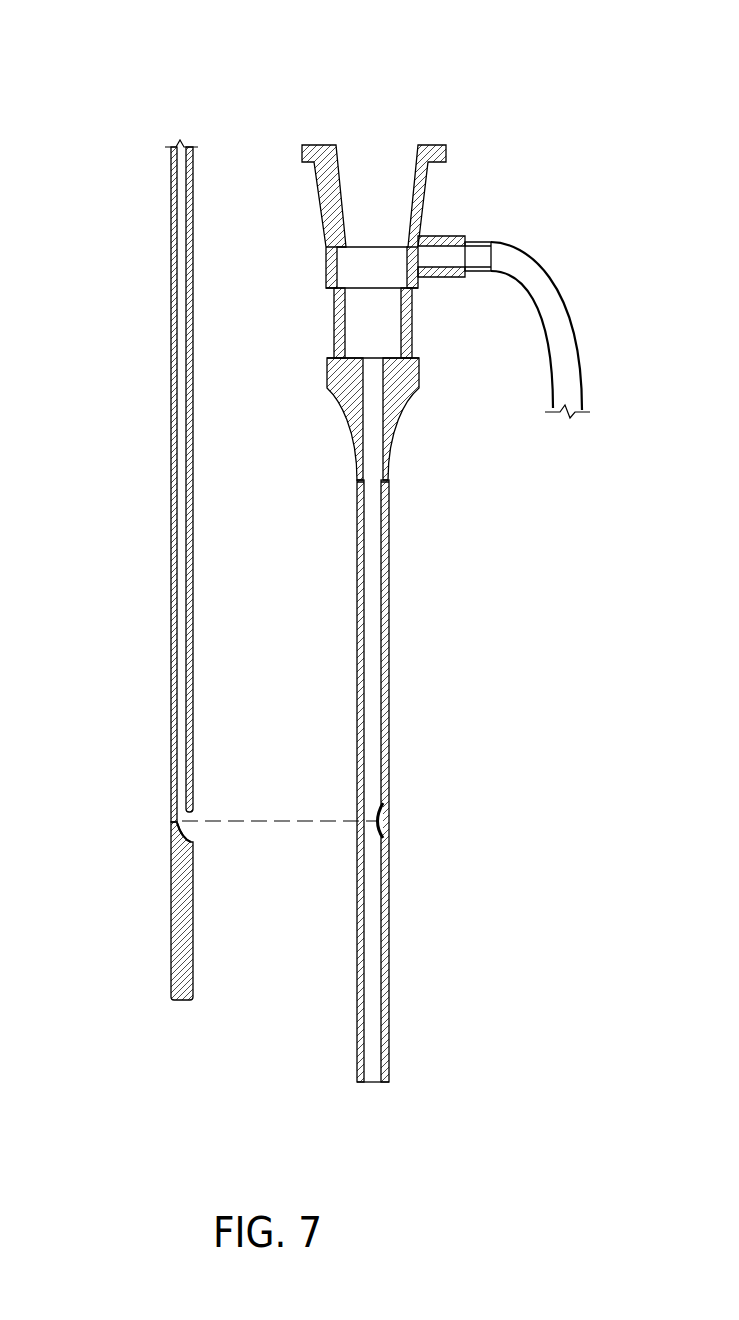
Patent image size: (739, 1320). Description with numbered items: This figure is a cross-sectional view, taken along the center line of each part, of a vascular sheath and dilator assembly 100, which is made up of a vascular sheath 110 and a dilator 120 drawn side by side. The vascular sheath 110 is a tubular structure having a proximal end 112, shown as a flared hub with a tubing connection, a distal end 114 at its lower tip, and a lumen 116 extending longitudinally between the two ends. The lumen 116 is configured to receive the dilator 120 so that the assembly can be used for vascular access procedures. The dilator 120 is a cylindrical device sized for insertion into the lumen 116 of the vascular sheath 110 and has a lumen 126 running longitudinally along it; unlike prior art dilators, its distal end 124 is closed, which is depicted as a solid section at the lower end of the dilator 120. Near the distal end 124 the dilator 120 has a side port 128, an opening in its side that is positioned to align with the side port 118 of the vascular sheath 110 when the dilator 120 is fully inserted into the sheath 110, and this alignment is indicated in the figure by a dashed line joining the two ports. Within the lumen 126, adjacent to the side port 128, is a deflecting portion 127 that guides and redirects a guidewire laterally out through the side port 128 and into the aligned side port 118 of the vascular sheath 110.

The vascular sheath and dilator assembly 100 is at (183, 58).
The vascular sheath 110 is at (393, 704).
The proximal end 112 is at (421, 145).
The distal end 114 is at (383, 1083).
The lumen 116 is at (380, 639).
The side port 118 is at (390, 833).
The dilator 120 is at (170, 586).
The distal end 124 is at (172, 922).
The lumen 126 is at (180, 318).
The deflecting portion 127 is at (175, 822).
The side port 128 is at (188, 826).